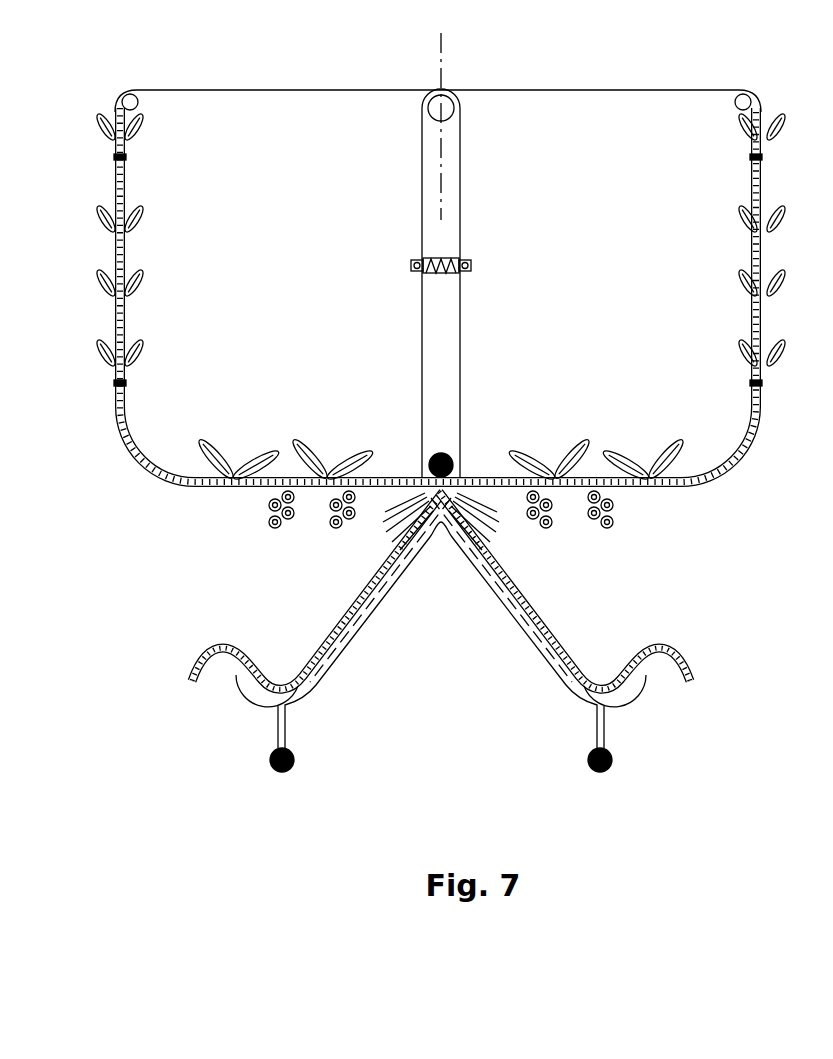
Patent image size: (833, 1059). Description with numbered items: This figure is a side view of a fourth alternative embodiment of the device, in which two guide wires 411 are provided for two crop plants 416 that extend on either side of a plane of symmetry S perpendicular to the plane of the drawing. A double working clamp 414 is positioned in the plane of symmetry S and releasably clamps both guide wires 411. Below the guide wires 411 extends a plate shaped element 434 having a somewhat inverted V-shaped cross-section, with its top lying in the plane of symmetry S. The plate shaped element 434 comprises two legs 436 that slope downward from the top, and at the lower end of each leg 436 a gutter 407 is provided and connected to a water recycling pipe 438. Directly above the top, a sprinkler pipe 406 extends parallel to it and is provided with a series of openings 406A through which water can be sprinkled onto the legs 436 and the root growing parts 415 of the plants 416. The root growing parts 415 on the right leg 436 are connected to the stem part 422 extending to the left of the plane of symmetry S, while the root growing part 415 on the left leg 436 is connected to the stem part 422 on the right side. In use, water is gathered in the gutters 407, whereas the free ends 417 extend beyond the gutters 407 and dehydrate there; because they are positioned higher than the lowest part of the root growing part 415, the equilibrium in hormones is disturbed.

The plane of symmetry S is at (443, 47).
The guide wires 411 is at (272, 90).
The double working clamp 414 is at (495, 291).
The sprinkler pipe 406 is at (504, 422).
The openings 406A is at (414, 466).
The crop plants 416 is at (130, 471).
The stem part 422 is at (436, 505).
The root growing parts 415 is at (436, 590).
The free ends 417 is at (188, 678).
The plate shaped element 434 is at (441, 663).
The legs 436 is at (441, 752).
The water recycling pipe 438 is at (282, 772).
The gutter 407 is at (244, 715).